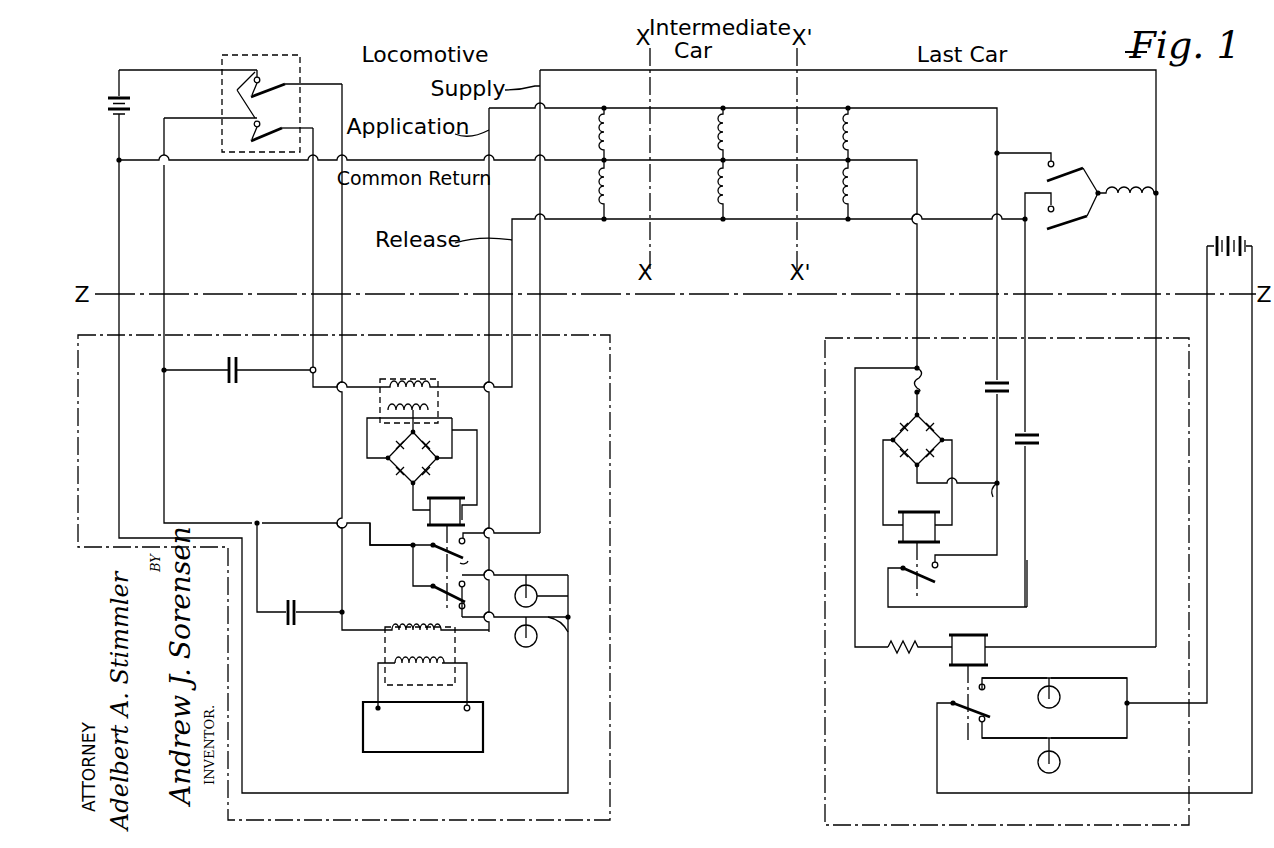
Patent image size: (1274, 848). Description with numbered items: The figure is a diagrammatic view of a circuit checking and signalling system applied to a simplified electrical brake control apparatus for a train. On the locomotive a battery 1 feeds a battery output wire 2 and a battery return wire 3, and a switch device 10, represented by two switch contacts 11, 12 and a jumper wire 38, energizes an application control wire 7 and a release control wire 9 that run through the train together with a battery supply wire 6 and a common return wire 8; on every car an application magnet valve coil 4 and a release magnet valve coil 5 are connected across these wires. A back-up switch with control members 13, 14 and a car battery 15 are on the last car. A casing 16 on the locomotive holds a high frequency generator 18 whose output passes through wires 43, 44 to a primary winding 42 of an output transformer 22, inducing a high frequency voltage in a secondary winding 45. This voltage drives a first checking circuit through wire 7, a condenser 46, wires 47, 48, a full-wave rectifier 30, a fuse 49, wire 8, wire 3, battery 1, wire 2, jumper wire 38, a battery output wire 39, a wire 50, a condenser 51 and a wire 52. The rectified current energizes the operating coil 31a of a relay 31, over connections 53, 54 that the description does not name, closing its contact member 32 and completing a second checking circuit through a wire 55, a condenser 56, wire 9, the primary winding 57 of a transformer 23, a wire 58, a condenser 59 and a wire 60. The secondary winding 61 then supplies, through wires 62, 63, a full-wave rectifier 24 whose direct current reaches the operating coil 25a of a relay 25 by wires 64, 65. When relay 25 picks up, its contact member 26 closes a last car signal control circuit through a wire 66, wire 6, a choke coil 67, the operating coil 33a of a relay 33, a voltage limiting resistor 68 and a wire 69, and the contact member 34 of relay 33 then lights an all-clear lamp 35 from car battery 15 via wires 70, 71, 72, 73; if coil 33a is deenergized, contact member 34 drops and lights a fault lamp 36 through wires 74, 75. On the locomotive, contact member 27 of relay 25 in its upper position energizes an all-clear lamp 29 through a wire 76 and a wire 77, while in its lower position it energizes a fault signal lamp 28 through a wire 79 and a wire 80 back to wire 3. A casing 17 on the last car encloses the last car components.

The battery 1 is at (108, 114).
The battery output wire 2 is at (186, 52).
The battery return wire 3 is at (118, 154).
The application magnet valve coil 4 is at (603, 140).
The release magnet valve coil 5 is at (603, 192).
The battery supply wire 6 is at (874, 54).
The application control wire 7 is at (343, 222).
The common return wire 8 is at (178, 165).
The release control wire 9 is at (313, 266).
The switch device 10 is at (262, 34).
The switch contact 11 is at (259, 90).
The switch contact 12 is at (259, 134).
The control member 13 is at (1057, 163).
The control member 14 is at (1054, 220).
The car battery 15 is at (1250, 212).
The casing 16 is at (612, 398).
The casing 17 is at (826, 402).
The high frequency generator 18 is at (363, 718).
The output transformer 22 is at (398, 608).
The transformer 23 is at (406, 378).
The full-wave rectifier 24 is at (403, 469).
The relay 25 is at (406, 584).
The operating coil 25a is at (462, 525).
The contact member 26 is at (461, 544).
The contact member 27 is at (455, 590).
The fault signal lamp 28 is at (533, 648).
The all-clear lamp 29 is at (568, 601).
The full-wave rectifier 30 is at (907, 451).
The relay 31 is at (854, 560).
The operating coil 31a is at (918, 544).
The contact member 32 is at (928, 586).
The relay 33 is at (916, 699).
The operating coil 33a is at (974, 650).
The contact member 34 is at (982, 711).
The all-clear lamp 35 is at (1060, 703).
The fault lamp 36 is at (1060, 765).
The jumper wire 38 is at (237, 92).
The battery output wire 39 is at (172, 262).
The primary winding 42 is at (433, 662).
The wire 43 is at (378, 684).
The wire 44 is at (467, 686).
The secondary winding 45 is at (388, 644).
The condenser 46 is at (988, 398).
The wire 47 is at (997, 460).
The wire 48 is at (979, 499).
The fuse 49 is at (910, 388).
The wire 50 is at (257, 580).
The condenser 51 is at (292, 602).
The wire 52 is at (310, 618).
The connecting wire 53 is at (883, 498).
The connecting wire 54 is at (942, 494).
The wire 55 is at (1026, 576).
The condenser 56 is at (1038, 446).
The primary winding 57 is at (390, 383).
The wire 58 is at (297, 372).
The condenser 59 is at (237, 361).
The wire 60 is at (186, 376).
The secondary winding 61 is at (432, 410).
The wire 62 is at (367, 444).
The wire 63 is at (452, 442).
The wire 64 is at (413, 498).
The wire 65 is at (478, 474).
The wire 66 is at (308, 508).
The choke coil 67 is at (1136, 170).
The voltage limiting resistor 68 is at (890, 641).
The wire 69 is at (855, 577).
The wire 70 is at (1210, 414).
The wire 71 is at (1012, 678).
The wire 72 is at (1092, 678).
The wire 73 is at (1210, 374).
The wire 74 is at (1000, 741).
The wire 75 is at (1076, 739).
The wire 76 is at (413, 567).
The wire 77 is at (503, 575).
The wire 79 is at (510, 618).
The wire 80 is at (569, 632).